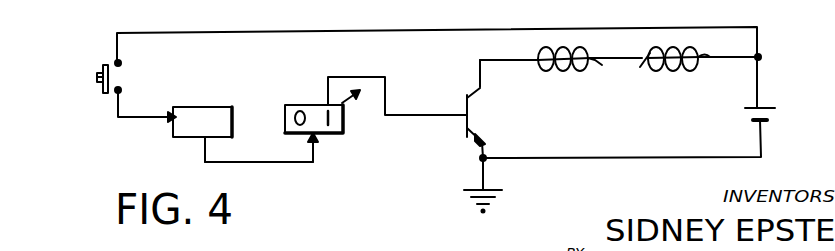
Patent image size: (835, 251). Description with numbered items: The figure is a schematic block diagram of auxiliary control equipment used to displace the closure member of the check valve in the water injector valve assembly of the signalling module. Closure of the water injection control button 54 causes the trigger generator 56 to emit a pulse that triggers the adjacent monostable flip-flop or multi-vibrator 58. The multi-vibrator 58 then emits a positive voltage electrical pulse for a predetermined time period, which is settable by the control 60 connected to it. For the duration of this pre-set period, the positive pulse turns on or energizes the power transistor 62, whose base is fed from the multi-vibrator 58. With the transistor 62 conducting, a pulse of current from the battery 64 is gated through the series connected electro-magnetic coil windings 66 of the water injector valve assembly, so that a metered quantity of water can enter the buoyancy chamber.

The water injection control button 54 is at (99, 65).
The trigger generator 56 is at (232, 106).
The monostable flip-flop or multi-vibrator 58 is at (345, 134).
The control 60 is at (283, 134).
The power transistor 62 is at (487, 86).
The battery 64 is at (768, 118).
The electro-magnetic coil windings 66 is at (624, 70).